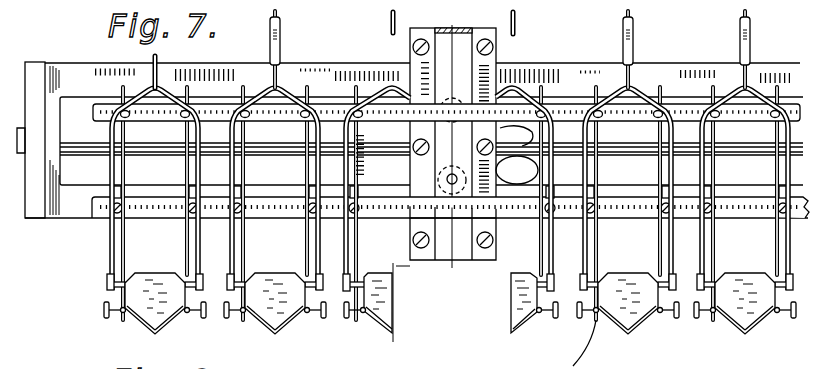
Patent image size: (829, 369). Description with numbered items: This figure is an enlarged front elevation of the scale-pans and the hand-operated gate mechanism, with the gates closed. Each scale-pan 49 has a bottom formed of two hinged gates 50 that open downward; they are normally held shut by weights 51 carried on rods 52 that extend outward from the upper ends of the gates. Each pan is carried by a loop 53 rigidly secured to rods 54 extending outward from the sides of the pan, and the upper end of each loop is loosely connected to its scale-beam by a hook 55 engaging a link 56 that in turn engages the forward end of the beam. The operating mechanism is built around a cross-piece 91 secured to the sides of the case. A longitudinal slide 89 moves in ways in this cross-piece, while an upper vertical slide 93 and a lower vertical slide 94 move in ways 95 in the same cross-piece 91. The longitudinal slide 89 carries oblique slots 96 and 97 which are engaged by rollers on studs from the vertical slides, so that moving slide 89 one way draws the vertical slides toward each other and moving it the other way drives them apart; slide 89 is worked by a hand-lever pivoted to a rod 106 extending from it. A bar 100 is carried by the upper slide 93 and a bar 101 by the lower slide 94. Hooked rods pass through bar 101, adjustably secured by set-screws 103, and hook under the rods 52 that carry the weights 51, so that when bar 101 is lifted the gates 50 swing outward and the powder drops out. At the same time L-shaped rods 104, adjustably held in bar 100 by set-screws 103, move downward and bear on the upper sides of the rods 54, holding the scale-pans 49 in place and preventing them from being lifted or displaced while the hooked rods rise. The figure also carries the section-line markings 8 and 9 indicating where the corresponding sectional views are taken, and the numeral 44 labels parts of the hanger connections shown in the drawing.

The section line 8- 8 is at (401, 311).
The section line 9- 9 is at (452, 139).
The sleeve 44 is at (280, 23).
The scale-pans 49 is at (402, 294).
The hinged gates 50 is at (143, 323).
The weights 51 is at (105, 311).
The rods 52 is at (201, 319).
The loops 53 is at (107, 270).
The rods 54 is at (128, 282).
The hooks 55 is at (271, 70).
The links 56 is at (282, 40).
The longitudinal slide 89 is at (377, 155).
The cross-piece 91 is at (412, 140).
The upper vertical slide 93 is at (440, 70).
The lower vertical slide 94 is at (453, 239).
The ways 95 is at (437, 27).
The oblique slot 96 is at (516, 136).
The oblique slot 97 is at (517, 170).
The bar 100 is at (690, 117).
The bar 101 is at (90, 220).
The set-screws 103 is at (303, 122).
The L-shaped rods 104 is at (186, 167).
The rod 106 is at (101, 137).